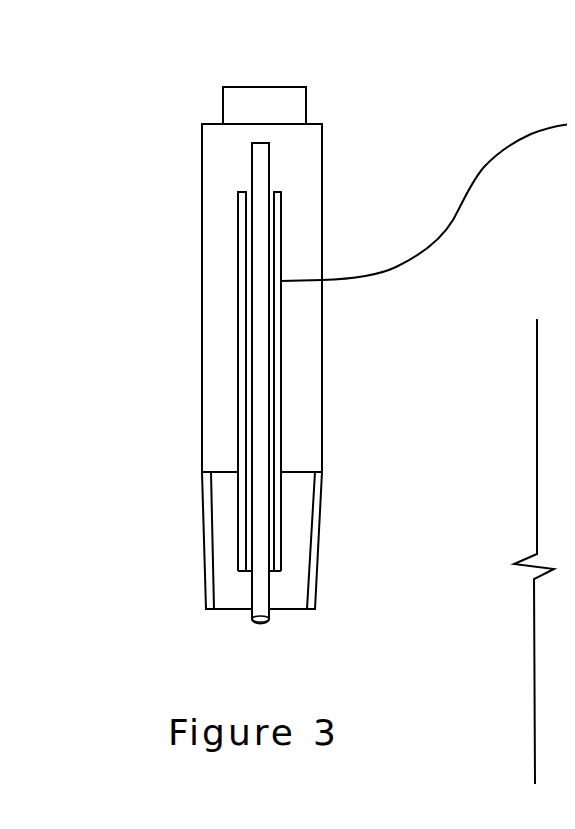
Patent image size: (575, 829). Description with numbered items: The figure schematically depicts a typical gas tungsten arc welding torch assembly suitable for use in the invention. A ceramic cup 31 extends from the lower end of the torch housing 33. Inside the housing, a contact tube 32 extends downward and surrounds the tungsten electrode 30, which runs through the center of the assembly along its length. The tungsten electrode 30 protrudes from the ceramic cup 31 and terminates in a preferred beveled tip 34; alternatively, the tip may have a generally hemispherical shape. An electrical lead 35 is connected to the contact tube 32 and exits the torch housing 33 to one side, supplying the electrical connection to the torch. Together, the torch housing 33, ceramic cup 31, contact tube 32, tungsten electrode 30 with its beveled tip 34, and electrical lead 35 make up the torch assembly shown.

The tungsten electrode 30 is at (268, 610).
The ceramic cup 31 is at (315, 540).
The contact tube 32 is at (280, 382).
The torch housing 33 is at (200, 263).
The beveled tip 34 is at (252, 621).
The electrical lead 35 is at (483, 166).